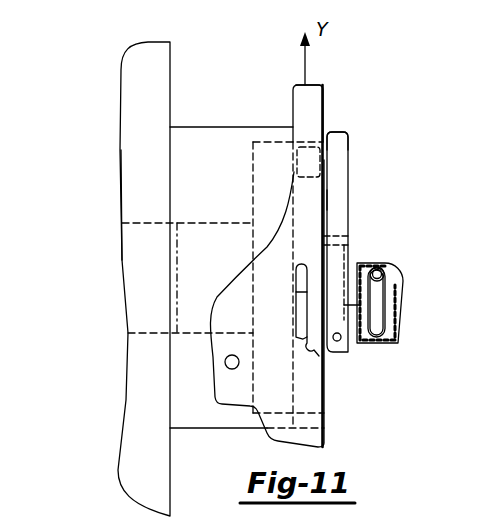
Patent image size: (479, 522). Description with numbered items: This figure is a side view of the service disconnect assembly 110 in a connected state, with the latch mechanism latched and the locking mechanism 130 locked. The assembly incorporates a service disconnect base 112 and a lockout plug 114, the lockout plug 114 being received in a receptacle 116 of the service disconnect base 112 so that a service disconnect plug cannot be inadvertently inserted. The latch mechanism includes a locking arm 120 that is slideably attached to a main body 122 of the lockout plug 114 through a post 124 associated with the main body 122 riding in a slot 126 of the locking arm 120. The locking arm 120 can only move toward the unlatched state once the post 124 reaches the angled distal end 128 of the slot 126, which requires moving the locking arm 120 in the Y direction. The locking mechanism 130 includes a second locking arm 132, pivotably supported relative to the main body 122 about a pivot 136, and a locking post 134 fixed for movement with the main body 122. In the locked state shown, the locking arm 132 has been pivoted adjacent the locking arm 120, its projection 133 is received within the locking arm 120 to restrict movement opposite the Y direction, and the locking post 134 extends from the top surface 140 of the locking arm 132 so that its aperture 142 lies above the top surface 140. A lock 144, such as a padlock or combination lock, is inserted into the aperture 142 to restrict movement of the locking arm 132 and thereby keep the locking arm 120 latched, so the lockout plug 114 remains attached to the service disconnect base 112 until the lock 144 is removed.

The service disconnect assembly 110 is at (108, 86).
The service disconnect base 112 is at (122, 173).
The lockout plug 114 is at (328, 80).
The receptacle 116 is at (196, 135).
The locking arm 120 is at (300, 100).
The main body 122 is at (210, 277).
The post 124 is at (305, 270).
The slot 126 is at (300, 338).
The distal end 128 is at (303, 346).
The locking mechanism 130 is at (356, 168).
The locking arm 132 is at (338, 136).
The projection 133 is at (313, 158).
The locking post 134 is at (403, 272).
The pivot 136 is at (341, 339).
The top surface 140 is at (325, 198).
The aperture 142 is at (386, 270).
The lock 144 is at (394, 325).